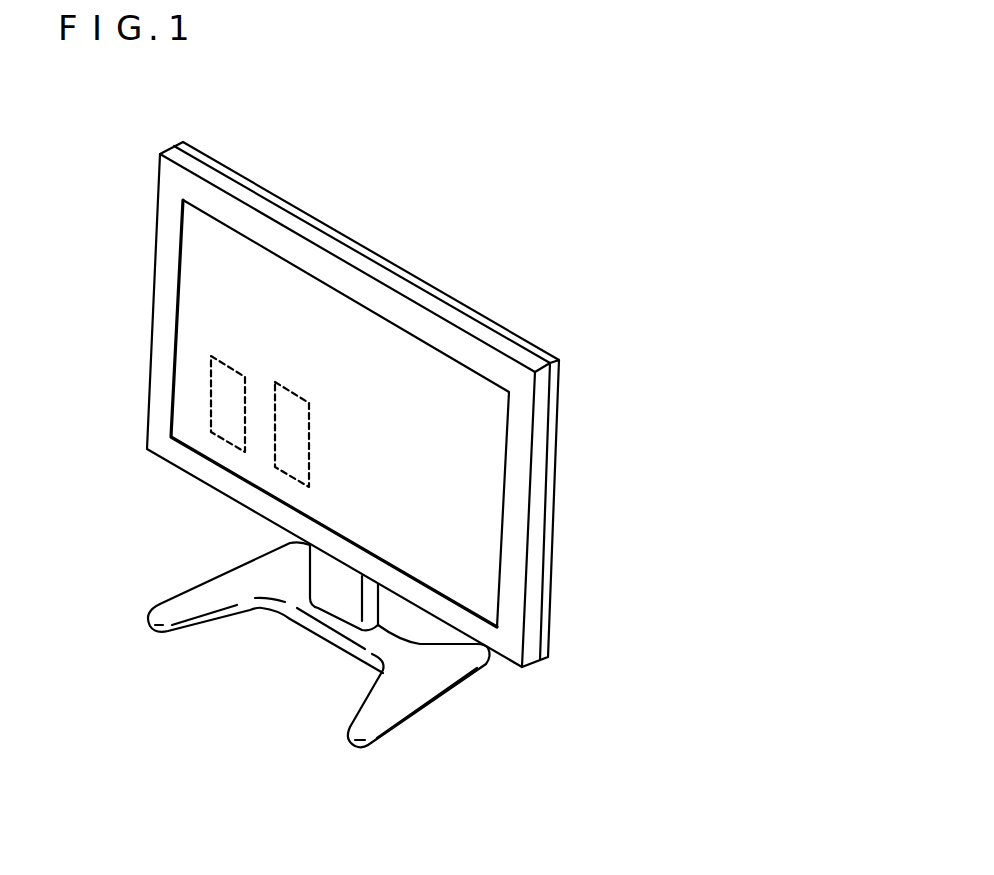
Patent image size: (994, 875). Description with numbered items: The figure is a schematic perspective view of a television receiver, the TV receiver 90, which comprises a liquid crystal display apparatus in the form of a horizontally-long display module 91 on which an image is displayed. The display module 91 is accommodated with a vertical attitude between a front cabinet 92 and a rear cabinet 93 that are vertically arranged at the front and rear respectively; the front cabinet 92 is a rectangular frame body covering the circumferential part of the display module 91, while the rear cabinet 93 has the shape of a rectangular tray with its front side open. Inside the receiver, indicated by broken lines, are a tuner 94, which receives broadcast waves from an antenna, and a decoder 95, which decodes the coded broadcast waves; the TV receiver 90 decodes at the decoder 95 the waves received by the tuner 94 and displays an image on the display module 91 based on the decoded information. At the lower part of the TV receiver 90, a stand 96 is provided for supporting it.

The TV receiver 90 is at (497, 243).
The display module 91 is at (442, 387).
The front cabinet 92 is at (510, 587).
The rear cabinet 93 is at (548, 535).
The tuner 94 is at (228, 424).
The decoder 95 is at (290, 460).
The stand 96 is at (427, 693).